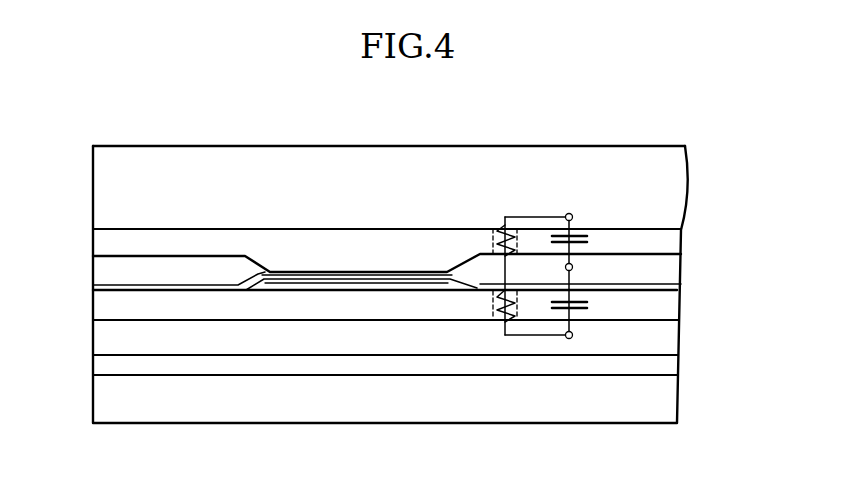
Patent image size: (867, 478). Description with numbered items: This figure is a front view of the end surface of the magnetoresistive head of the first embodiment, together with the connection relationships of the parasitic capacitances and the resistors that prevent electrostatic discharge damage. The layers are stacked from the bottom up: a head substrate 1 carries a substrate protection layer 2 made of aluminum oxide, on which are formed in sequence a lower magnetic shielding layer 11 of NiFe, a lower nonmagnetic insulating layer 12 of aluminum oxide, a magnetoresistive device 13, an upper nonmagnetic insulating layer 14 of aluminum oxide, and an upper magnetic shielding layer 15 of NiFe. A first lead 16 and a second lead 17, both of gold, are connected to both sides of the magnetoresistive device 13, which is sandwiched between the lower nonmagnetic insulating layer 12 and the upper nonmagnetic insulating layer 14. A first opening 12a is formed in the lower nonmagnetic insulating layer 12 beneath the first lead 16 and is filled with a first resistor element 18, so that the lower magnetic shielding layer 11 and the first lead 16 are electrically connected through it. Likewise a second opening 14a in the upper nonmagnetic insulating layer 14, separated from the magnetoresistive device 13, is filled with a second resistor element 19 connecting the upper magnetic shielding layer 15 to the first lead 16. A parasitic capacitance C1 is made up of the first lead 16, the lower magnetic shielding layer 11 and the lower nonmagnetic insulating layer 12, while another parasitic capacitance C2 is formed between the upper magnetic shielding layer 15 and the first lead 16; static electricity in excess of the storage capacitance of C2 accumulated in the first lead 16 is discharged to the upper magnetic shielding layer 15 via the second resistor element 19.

The head substrate 1 is at (655, 392).
The substrate protection layer 2 is at (665, 364).
The lower magnetic shielding layer 11 is at (665, 336).
The lower nonmagnetic insulating layer 12 is at (668, 303).
The first opening 12a is at (519, 312).
The magnetoresistive device 13 is at (330, 258).
The upper nonmagnetic insulating layer 14 is at (665, 237).
The second opening 14a is at (493, 250).
The upper magnetic shielding layer 15 is at (655, 176).
The first lead 16 is at (665, 268).
The second lead 17 is at (122, 267).
The first resistor element 18 is at (505, 320).
The second resistor element 19 is at (497, 230).
The parasitic capacitance C1 is at (593, 303).
The parasitic capacitance C2 is at (600, 240).